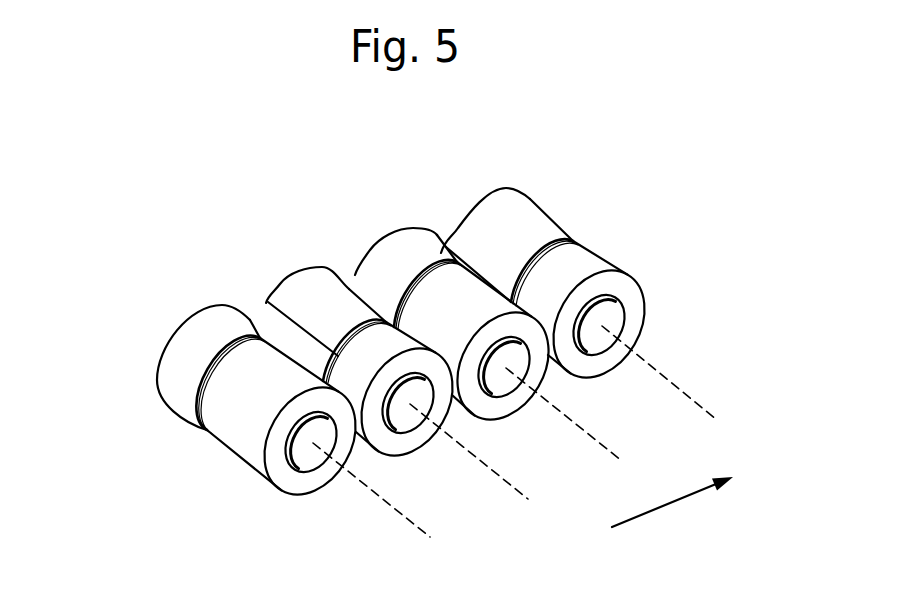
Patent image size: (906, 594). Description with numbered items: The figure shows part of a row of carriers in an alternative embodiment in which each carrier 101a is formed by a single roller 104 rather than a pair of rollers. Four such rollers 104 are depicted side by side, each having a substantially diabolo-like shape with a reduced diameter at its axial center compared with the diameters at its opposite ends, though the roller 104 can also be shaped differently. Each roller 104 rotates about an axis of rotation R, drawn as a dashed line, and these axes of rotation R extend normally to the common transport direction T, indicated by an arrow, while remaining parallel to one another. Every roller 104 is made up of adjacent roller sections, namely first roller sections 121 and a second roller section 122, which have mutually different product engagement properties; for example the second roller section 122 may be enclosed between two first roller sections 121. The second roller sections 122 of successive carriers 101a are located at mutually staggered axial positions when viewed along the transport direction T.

The carrier 101a is at (175, 310).
The roller 104 is at (247, 450).
The first roller section 121 is at (173, 361).
The second roller section 122 is at (197, 393).
The axis of rotation R is at (607, 447).
The transport direction T is at (672, 506).